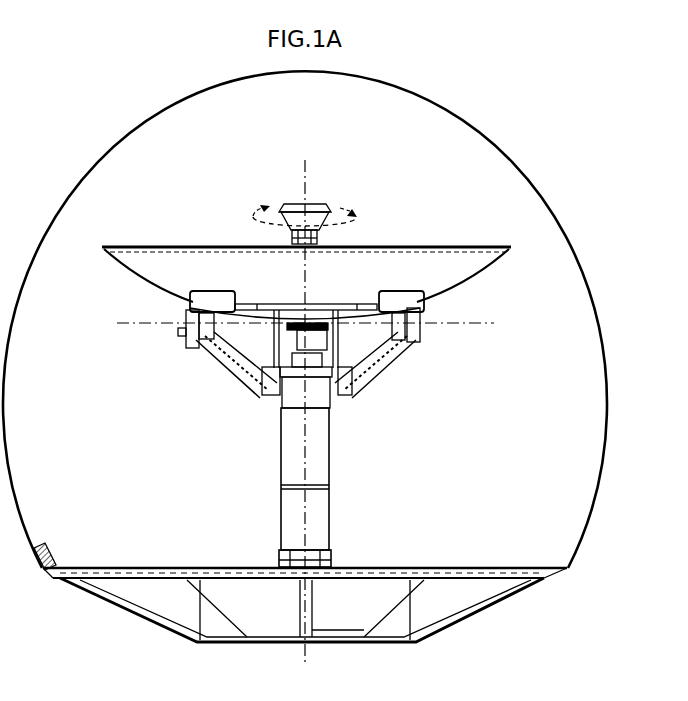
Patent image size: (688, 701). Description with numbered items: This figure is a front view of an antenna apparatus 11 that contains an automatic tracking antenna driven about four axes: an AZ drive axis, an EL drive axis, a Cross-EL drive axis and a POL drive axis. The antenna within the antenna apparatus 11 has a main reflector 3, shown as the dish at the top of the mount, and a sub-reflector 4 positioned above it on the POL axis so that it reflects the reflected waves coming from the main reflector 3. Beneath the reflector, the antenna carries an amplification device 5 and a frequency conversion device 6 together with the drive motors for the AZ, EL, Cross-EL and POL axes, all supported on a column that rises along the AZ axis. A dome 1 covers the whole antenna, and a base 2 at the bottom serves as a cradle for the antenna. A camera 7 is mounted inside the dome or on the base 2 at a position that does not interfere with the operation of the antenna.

The dome 1 is at (531, 180).
The base 2 is at (478, 612).
The main reflector 3 is at (186, 246).
The sub-reflector 4 is at (323, 203).
The amplification device 5 is at (272, 408).
The frequency conversion device 6 is at (305, 487).
The camera 7 is at (52, 547).
The antenna apparatus 11 is at (500, 130).